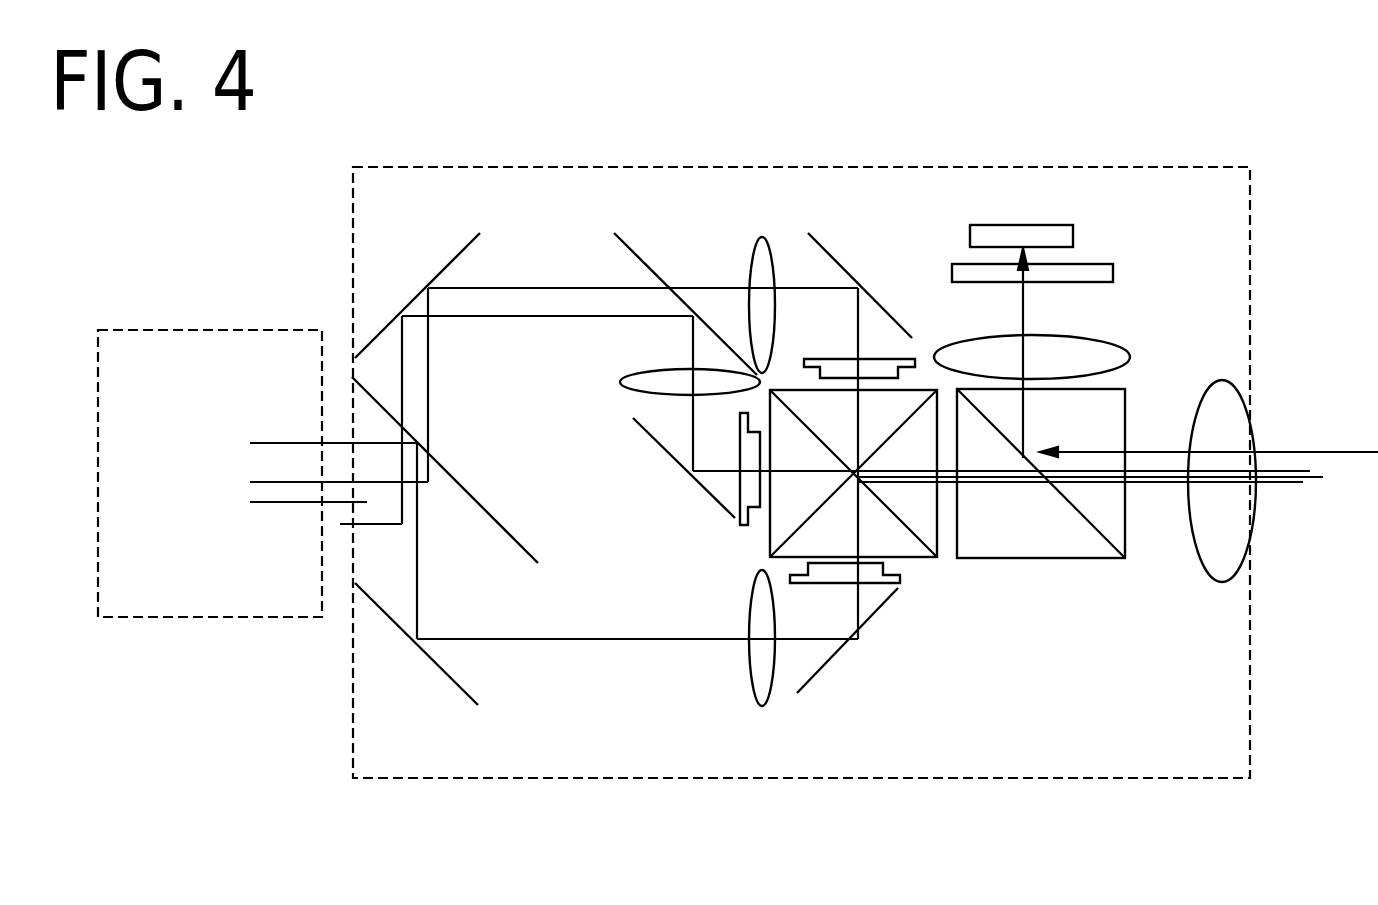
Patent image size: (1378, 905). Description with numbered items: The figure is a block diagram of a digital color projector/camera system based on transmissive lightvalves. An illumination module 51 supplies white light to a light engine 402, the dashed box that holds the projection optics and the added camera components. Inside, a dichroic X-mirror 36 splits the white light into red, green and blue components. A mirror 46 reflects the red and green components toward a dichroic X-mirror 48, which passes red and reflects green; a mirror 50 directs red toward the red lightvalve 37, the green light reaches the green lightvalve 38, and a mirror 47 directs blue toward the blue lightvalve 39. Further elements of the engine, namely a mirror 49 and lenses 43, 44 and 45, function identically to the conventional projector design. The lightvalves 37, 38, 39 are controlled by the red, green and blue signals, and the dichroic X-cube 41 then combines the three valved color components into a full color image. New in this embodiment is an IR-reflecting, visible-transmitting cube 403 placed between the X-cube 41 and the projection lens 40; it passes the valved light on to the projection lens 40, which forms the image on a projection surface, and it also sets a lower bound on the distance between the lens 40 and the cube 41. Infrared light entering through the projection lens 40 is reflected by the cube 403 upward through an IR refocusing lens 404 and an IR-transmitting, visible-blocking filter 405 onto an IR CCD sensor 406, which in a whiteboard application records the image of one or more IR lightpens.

The light engine 402 is at (411, 167).
The illumination module 51 is at (158, 617).
The mirror 46 is at (450, 262).
The dichroic X-mirror 36 is at (457, 485).
The mirror 47 is at (440, 672).
The dichroic X-mirror 48 is at (637, 254).
The mirror 50 is at (842, 267).
The mirror 49 is at (830, 660).
The lens 43 is at (760, 237).
The lens 44 is at (620, 380).
The lens 45 is at (753, 678).
The IR refocusing lens 404 is at (1130, 357).
The projection lens 40 is at (1255, 503).
The red lightvalve 37 is at (835, 358).
The green lightvalve 38 is at (740, 525).
The blue lightvalve 39 is at (813, 584).
The IR transmitting, visible-blocking filter 405 is at (1113, 272).
The IR CCD sensor 406 is at (1073, 233).
The dichroic X-cube 41 is at (917, 560).
The IR-reflecting, visible-transmitting cube 403 is at (1098, 560).